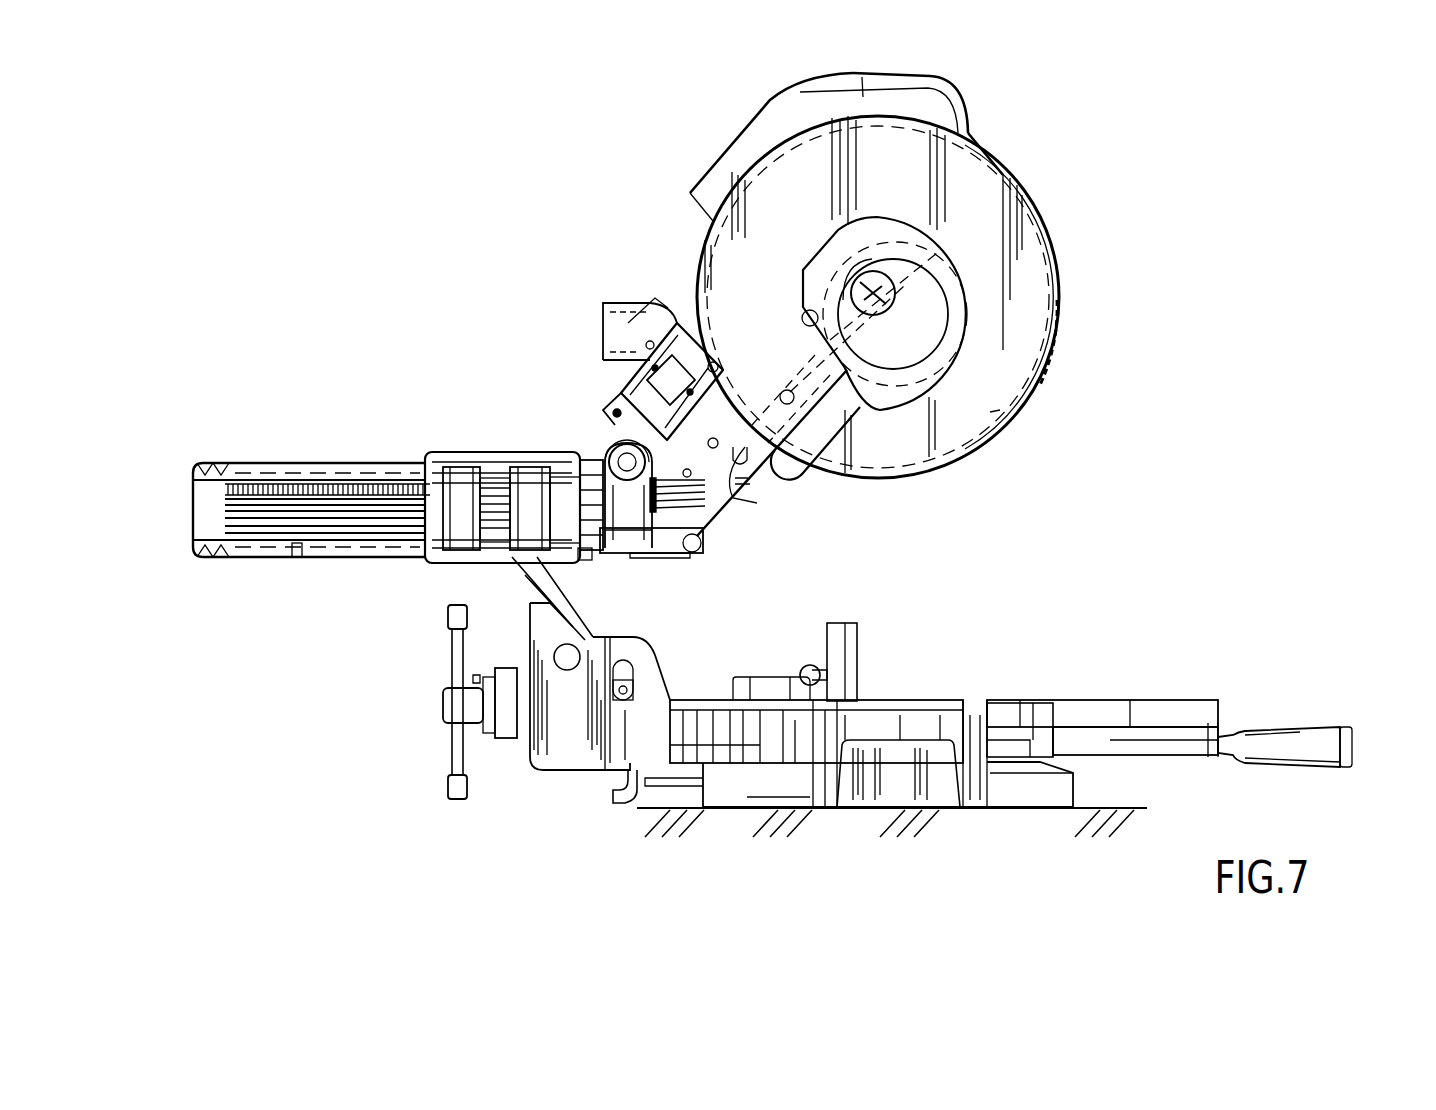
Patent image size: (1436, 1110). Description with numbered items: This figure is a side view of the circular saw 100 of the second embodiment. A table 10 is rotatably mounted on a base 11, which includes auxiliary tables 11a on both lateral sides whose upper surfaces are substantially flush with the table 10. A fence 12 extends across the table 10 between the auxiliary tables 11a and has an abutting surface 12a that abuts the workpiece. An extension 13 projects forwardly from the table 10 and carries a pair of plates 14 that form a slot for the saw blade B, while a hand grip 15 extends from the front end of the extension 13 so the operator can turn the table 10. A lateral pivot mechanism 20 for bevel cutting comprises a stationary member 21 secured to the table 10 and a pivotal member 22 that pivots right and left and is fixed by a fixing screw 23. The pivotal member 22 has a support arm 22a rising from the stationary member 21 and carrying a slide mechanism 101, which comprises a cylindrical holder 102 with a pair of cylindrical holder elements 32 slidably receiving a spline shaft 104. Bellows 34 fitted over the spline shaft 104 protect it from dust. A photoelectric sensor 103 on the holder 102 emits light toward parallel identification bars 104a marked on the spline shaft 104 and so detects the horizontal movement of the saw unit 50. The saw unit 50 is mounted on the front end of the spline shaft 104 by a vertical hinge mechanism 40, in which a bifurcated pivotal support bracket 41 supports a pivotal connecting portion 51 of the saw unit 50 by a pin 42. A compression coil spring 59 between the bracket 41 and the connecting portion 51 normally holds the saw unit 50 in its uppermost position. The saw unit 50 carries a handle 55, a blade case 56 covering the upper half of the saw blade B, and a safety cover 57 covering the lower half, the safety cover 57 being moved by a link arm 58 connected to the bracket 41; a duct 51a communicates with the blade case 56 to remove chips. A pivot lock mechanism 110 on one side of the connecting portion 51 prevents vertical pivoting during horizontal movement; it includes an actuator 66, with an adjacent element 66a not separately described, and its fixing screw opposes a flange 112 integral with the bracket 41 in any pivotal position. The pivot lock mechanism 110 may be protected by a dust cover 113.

The table 10 is at (1003, 700).
The base 11 is at (1027, 783).
The auxiliary tables 11a is at (920, 713).
The fence 12 is at (833, 640).
The abutting surface 12a is at (853, 668).
The extension 13 is at (1153, 710).
The plates 14 is at (1107, 700).
The hand grip 15 is at (1284, 743).
The lateral pivot mechanism 20 is at (433, 752).
The stationary member 21 is at (640, 737).
The pivotal member 22 is at (570, 733).
The support arm 22a is at (503, 618).
The fixing screw 23 is at (443, 704).
The cylindrical holder elements 32 is at (553, 530).
The bellows 34 is at (297, 548).
The vertical hinge mechanism 40 is at (643, 570).
The pivotal support bracket 41 is at (626, 510).
The pin 42 is at (603, 437).
The saw unit 50 is at (1005, 160).
The pivotal connecting portion 51 is at (715, 500).
The duct 51a is at (630, 323).
The handle 55 is at (862, 77).
The blade case 56 is at (770, 183).
The safety cover 57 is at (1060, 321).
The link arm 58 is at (733, 498).
The compression coil spring 59 is at (703, 551).
The actuator 66 is at (662, 305).
The switch housing 66a is at (607, 337).
The circular saw 100 is at (642, 218).
The slide mechanism 101 is at (403, 432).
The cylindrical holder 102 is at (528, 455).
The photoelectric sensor 103 is at (480, 452).
The spline shaft 104 is at (248, 507).
The parallel identification bars 104a is at (310, 510).
The pivot lock mechanism 110 is at (692, 360).
The flange 112 is at (728, 400).
The dust cover 113 is at (737, 407).
The saw blade B is at (1000, 410).